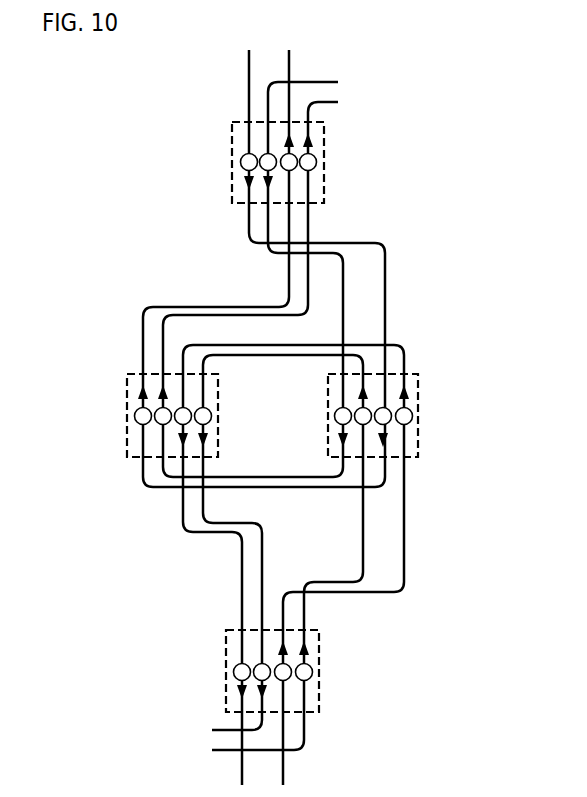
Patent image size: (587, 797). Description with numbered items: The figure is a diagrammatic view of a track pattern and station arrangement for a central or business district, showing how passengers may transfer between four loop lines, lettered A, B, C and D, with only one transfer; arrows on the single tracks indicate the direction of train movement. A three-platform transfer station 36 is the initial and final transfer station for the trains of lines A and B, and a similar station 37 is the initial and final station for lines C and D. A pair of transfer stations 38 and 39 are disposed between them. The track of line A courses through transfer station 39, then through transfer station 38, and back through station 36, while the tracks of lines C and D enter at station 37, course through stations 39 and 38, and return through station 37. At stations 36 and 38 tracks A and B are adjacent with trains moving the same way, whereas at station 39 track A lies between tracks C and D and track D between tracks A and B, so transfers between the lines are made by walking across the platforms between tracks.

The three-platform transfer station 36 is at (324, 153).
The transfer station 37 is at (319, 663).
The transfer station 38 is at (218, 408).
The transfer station 39 is at (418, 408).